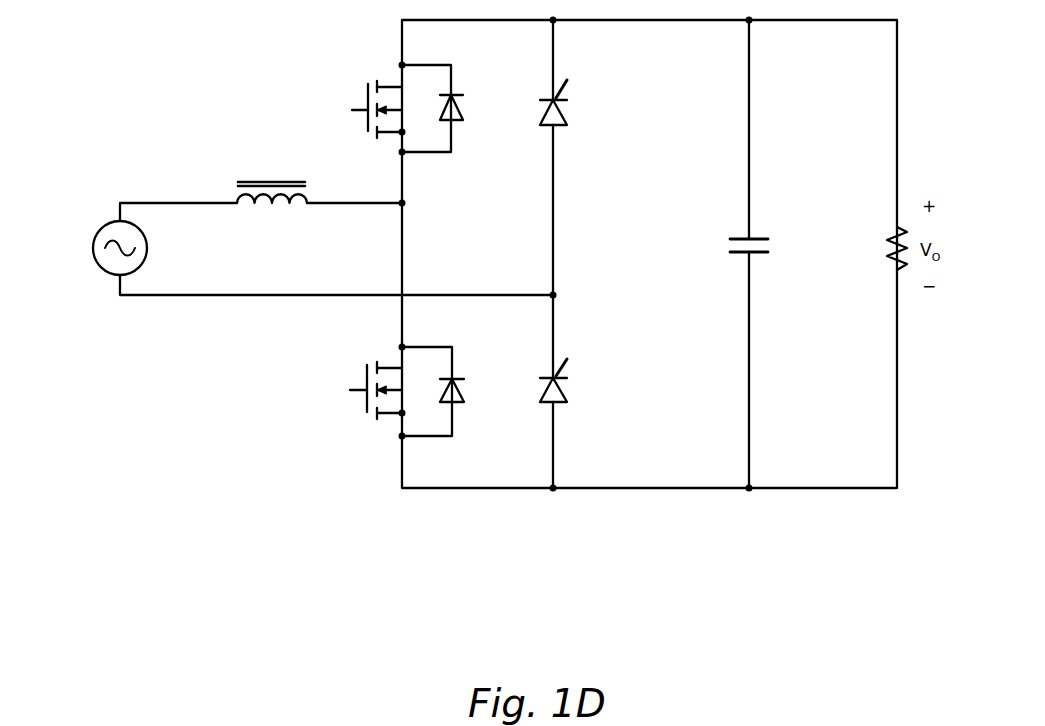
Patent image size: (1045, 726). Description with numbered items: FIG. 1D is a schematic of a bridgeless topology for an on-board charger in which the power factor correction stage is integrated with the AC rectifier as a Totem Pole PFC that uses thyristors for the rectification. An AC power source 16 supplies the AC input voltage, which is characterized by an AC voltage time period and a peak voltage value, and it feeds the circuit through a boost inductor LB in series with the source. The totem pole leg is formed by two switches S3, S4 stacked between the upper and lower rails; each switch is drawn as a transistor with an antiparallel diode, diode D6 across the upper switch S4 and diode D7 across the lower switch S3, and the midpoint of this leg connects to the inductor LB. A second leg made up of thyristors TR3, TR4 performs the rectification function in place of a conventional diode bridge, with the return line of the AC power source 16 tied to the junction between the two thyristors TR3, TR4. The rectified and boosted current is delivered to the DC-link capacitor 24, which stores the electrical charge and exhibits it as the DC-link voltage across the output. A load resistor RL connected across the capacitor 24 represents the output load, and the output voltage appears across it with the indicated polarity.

The AC power source 16 is at (105, 223).
The DC-link capacitor 24 is at (757, 238).
The boost inductor LB is at (272, 211).
The switch S4 is at (362, 113).
The diode D6 is at (444, 108).
The switch S3 is at (362, 391).
The diode D7 is at (445, 391).
The thyristor TR3 is at (576, 157).
The thyristor TR4 is at (571, 391).
The load resistor RL is at (873, 248).